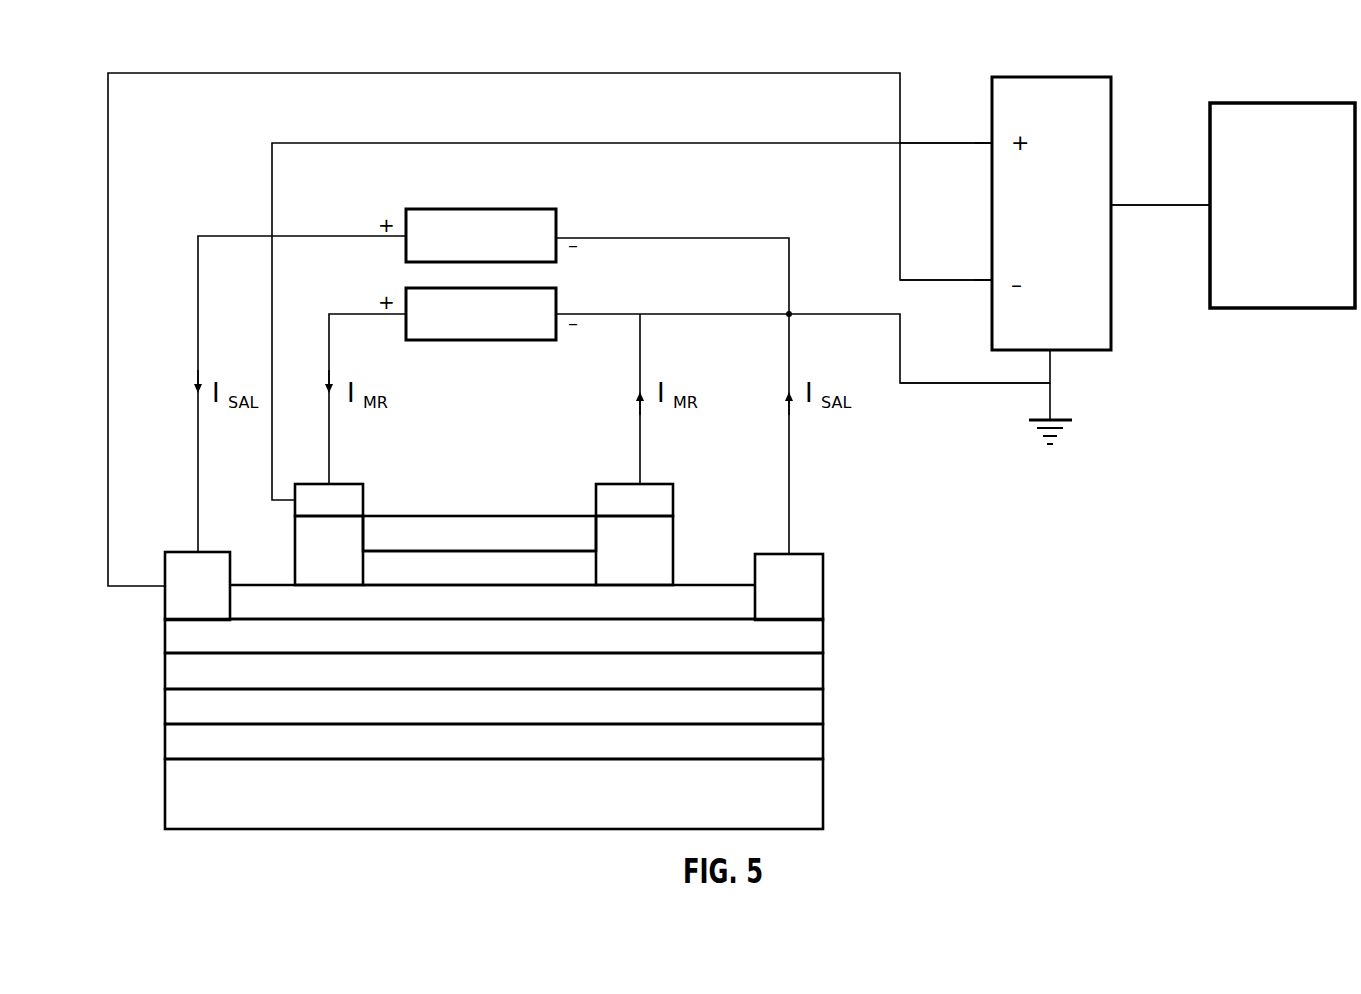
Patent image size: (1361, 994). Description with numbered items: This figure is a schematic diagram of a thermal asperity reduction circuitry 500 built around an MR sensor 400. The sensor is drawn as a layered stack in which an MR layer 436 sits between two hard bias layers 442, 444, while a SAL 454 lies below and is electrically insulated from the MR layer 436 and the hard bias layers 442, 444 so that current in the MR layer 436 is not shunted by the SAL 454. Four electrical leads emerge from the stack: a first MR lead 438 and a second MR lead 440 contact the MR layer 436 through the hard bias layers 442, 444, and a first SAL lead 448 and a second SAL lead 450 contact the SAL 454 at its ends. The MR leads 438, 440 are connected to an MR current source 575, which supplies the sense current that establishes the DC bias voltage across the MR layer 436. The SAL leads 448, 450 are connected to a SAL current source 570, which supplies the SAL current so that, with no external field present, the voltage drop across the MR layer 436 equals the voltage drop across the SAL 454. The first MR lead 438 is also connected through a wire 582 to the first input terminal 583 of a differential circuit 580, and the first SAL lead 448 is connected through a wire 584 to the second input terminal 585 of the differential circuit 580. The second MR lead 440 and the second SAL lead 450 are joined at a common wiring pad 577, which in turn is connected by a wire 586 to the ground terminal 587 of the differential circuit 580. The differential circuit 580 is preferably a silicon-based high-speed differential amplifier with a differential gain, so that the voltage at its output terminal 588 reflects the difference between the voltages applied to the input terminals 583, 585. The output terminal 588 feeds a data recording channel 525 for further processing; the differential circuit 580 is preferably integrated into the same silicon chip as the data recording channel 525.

The MR sensor 400 is at (876, 826).
The MR layer 436 is at (500, 535).
The first MR lead 438 is at (350, 500).
The second MR lead 440 is at (665, 507).
The hard bias layer 442 is at (310, 545).
The hard bias layer 444 is at (665, 550).
The first SAL lead 448 is at (180, 568).
The second SAL lead 450 is at (797, 606).
The SAL 454 is at (795, 647).
The thermal asperity reduction circuitry 500 is at (1118, 46).
The data recording channel 525 is at (1293, 103).
The SAL current source 570 is at (530, 210).
The MR current source 575 is at (528, 340).
The common wiring pad 577 is at (789, 314).
The differential circuit 580 is at (1042, 77).
The wire 582 is at (925, 143).
The first input terminal 583 is at (990, 147).
The wire 584 is at (925, 280).
The second input terminal 585 is at (990, 283).
The wire 586 is at (1000, 385).
The ground terminal 587 is at (1072, 420).
The output terminal 588 is at (1170, 205).